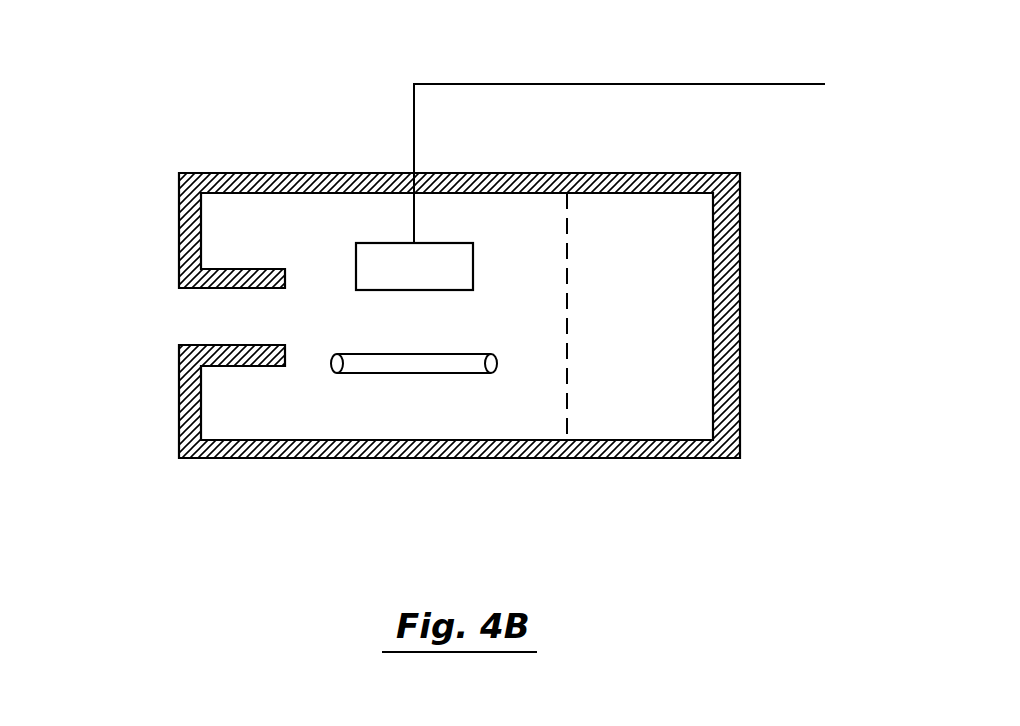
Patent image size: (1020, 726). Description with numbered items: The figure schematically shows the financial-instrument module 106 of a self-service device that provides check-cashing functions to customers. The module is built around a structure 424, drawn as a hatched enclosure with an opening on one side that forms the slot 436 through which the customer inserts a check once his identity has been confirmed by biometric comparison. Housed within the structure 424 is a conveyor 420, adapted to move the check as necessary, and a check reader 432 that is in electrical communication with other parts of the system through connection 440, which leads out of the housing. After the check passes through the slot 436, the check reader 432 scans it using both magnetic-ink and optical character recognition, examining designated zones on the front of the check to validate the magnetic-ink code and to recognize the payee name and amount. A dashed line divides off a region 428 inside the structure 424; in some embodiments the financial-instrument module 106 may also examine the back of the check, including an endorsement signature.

The financial-instrument module 106 is at (362, 494).
The conveyor 420 is at (407, 373).
The structure 424 is at (480, 172).
The chamber interior region 428 is at (675, 325).
The check reader 432 is at (357, 270).
The slot 436 is at (185, 316).
The connection 440 is at (577, 83).